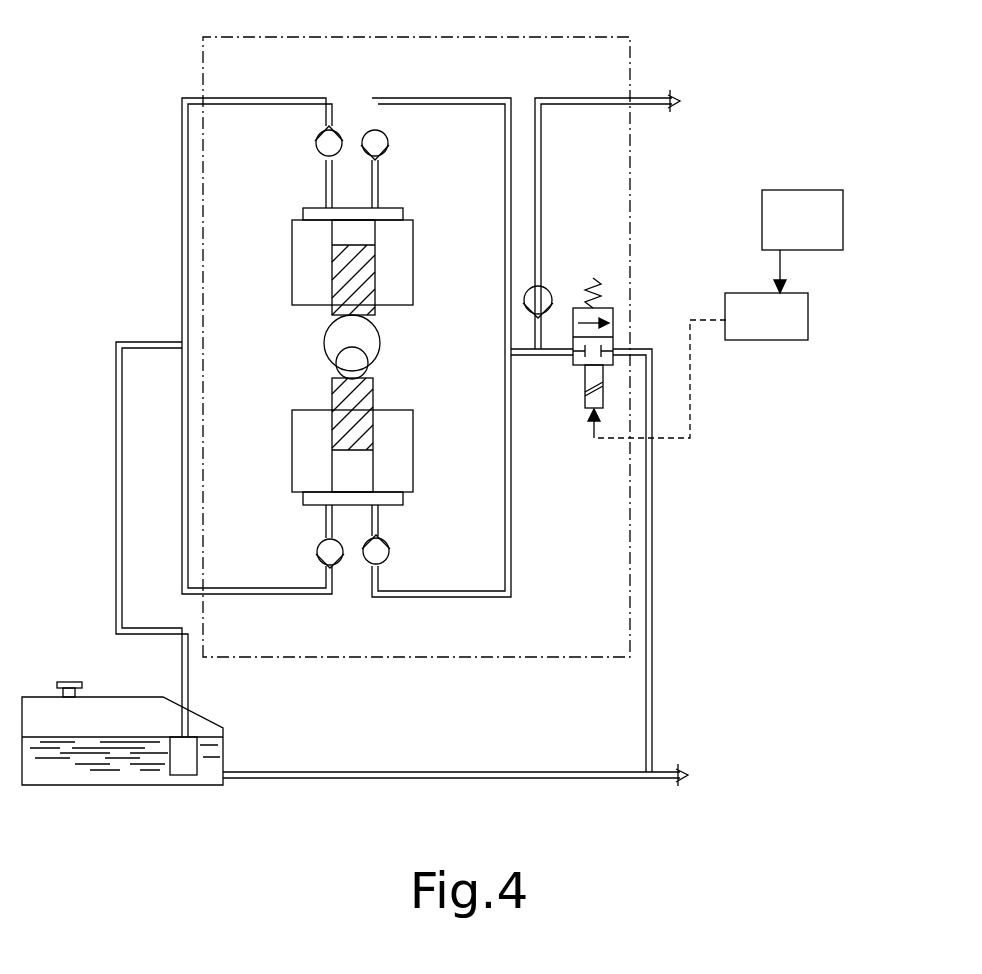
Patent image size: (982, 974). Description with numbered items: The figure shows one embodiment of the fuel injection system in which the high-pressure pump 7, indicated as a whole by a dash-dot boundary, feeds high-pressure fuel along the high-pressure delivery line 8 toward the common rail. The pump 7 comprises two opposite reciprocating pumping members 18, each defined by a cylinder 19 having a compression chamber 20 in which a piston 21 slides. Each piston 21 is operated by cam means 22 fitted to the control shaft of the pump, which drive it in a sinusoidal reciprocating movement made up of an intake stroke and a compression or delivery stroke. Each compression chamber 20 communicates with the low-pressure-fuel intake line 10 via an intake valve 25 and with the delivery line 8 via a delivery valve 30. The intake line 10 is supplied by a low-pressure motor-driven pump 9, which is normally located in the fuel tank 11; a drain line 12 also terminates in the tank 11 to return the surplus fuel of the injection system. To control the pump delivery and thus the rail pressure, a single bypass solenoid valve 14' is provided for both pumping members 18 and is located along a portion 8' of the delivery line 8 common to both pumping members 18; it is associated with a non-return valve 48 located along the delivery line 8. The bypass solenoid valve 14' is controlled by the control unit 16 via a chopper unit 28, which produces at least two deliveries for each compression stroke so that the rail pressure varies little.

The high-pressure pump 7 is at (600, 58).
The high-pressure delivery line 8 is at (622, 198).
The portion of delivery line 8' is at (542, 392).
The motor-driven pump 9 is at (190, 762).
The low-pressure-fuel intake line 10 is at (182, 697).
The fuel tank 11 is at (53, 705).
The drain line 12 is at (470, 772).
The bypass solenoid valve 14' is at (650, 521).
The control unit 16 is at (837, 232).
The reciprocating pumping member 18 is at (354, 356).
The cylinder 19 is at (313, 297).
The compression chamber 20 is at (357, 233).
The piston 21 is at (365, 307).
The cam means 22 is at (333, 348).
The intake valve 25 is at (320, 142).
The chopper unit 28 is at (805, 334).
The delivery valve 30 is at (388, 140).
The non-return valve 48 is at (546, 296).